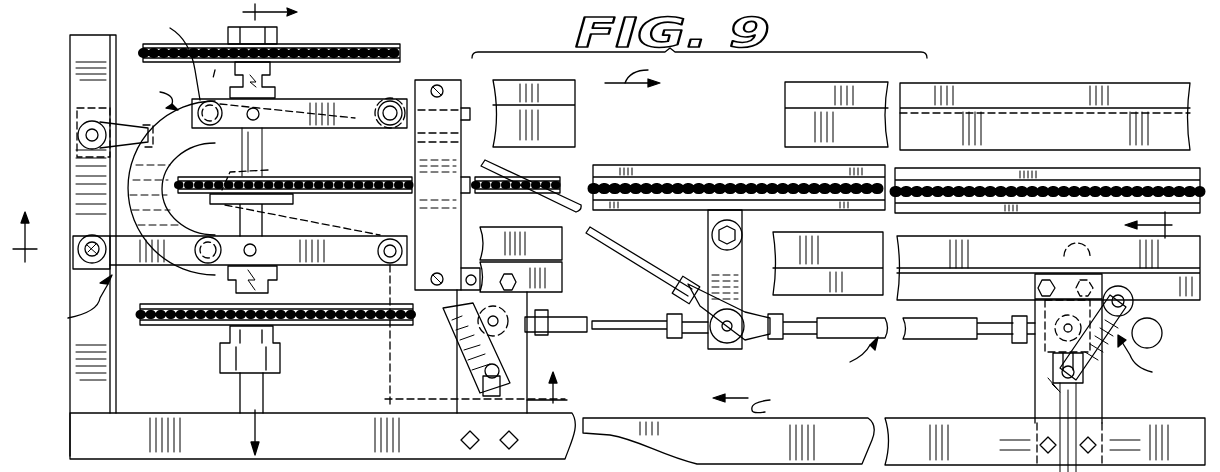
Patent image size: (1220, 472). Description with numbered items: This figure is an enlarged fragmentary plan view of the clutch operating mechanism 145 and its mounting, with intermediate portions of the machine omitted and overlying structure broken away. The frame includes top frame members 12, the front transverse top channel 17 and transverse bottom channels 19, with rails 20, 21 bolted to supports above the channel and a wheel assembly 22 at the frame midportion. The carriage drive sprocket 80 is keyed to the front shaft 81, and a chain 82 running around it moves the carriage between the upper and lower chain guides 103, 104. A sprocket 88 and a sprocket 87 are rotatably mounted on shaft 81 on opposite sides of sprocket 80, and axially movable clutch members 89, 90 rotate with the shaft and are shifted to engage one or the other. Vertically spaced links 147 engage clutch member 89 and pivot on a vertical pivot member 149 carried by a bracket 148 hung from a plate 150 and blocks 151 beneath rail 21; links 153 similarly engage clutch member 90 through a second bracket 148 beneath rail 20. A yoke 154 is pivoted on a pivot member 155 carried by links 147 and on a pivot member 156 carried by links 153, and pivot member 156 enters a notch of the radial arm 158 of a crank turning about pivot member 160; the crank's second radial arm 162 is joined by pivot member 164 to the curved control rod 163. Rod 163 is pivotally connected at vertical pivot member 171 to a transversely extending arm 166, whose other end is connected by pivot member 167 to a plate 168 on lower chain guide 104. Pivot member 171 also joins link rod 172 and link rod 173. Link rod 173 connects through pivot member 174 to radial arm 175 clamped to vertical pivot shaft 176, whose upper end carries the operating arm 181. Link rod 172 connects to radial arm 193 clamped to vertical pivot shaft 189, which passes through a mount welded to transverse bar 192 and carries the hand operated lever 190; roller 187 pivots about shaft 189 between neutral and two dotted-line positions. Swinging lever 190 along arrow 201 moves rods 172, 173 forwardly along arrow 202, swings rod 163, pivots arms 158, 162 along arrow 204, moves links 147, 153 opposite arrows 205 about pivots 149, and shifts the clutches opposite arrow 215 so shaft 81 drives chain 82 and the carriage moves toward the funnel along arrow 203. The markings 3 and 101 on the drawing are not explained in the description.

The section line 3 is at (305, 17).
The top frame members 12 is at (905, 425).
The transverse top channel 17 is at (75, 374).
The transverse bottom channels 19 is at (85, 56).
The rail 20 is at (836, 282).
The rail 21 is at (570, 92).
The wheel assembly 22 is at (1119, 226).
The carriage drive sprocket 80 is at (285, 200).
The front shaft 81 is at (270, 394).
The chain 82 is at (565, 188).
The sprocket 87 is at (295, 328).
The sprocket 88 is at (220, 40).
The clutch member 89 is at (285, 98).
The clutch member 90 is at (268, 268).
The upper rack 101 is at (395, 45).
The upper chain guide 103 is at (818, 178).
The lower chain guide 104 is at (760, 215).
The clutch operating mechanism 145 is at (508, 221).
The links 147 is at (345, 120).
The bracket 148 is at (437, 240).
The vertical pivot member 149 is at (392, 126).
The plate 150 is at (450, 118).
The blocks 151 is at (424, 88).
The links 153 is at (330, 266).
The yoke 154 is at (168, 160).
The pivot member 155 is at (165, 58).
The pivot member 156 is at (208, 264).
The radial arm 158 is at (150, 266).
The pivot member 160 is at (80, 272).
The second radial arm 162 is at (85, 172).
The rod 163 is at (545, 212).
The pivot member 164 is at (90, 120).
The arm 166 is at (742, 285).
The pivot member 167 is at (708, 260).
The plate 168 is at (712, 228).
The vertical pivot member 171 is at (728, 343).
The link rod 172 is at (958, 340).
The link rod 173 is at (650, 332).
The pivot member 174 is at (535, 302).
The radial arm 175 is at (470, 355).
The vertical pivot shaft 176 is at (480, 382).
The operating arm 181 is at (450, 325).
The roller 187 is at (1073, 262).
The vertical pivot shaft 189 is at (1050, 380).
The hand operated lever 190 is at (1078, 400).
The transverse bar 192 is at (1040, 400).
The radial arm 193 is at (1052, 368).
The arrow 201 is at (1122, 333).
The arrow 202 is at (758, 402).
The arrow 203 is at (643, 75).
The arrow 204 is at (66, 299).
The arrows 205 is at (375, 106).
The arrow 215 is at (268, 432).